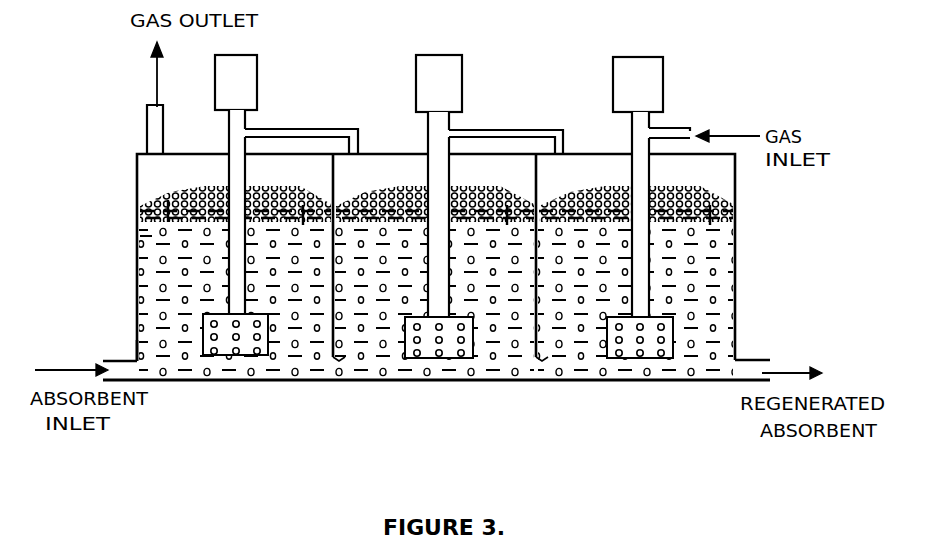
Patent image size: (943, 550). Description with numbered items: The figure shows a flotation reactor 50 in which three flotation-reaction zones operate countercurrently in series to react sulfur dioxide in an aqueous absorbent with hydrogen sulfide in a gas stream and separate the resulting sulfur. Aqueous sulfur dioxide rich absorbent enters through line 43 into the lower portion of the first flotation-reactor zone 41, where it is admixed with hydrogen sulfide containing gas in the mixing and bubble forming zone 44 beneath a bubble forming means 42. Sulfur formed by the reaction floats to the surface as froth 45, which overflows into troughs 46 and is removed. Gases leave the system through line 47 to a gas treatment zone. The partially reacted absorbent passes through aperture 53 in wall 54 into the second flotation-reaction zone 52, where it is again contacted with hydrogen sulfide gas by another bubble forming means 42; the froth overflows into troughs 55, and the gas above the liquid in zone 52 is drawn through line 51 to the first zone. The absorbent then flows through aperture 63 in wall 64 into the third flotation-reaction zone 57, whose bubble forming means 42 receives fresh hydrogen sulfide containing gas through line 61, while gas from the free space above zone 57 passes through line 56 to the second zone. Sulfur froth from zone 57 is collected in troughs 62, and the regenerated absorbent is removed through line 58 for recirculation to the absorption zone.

The first flotation-reactor zone 41 is at (300, 362).
The means for admixing and bubble forming 42 is at (257, 72).
The line 43 is at (105, 360).
The mixing and bubble forming zone 44 is at (253, 356).
The froth 45 is at (190, 196).
The troughs 46 is at (146, 237).
The line 47 is at (147, 128).
The flotation reactor 50 is at (784, 285).
The line 51 is at (311, 129).
The flotation-reaction zone 52 is at (508, 358).
The aperture 53 is at (327, 362).
The wall 54 is at (343, 358).
The troughs 55 is at (376, 196).
The line 56 is at (521, 132).
The flotation-reaction zone 57 is at (705, 358).
The line 58 is at (770, 360).
The line 61 is at (691, 128).
The troughs 62 is at (735, 226).
The aperture 63 is at (535, 362).
The wall 64 is at (548, 357).